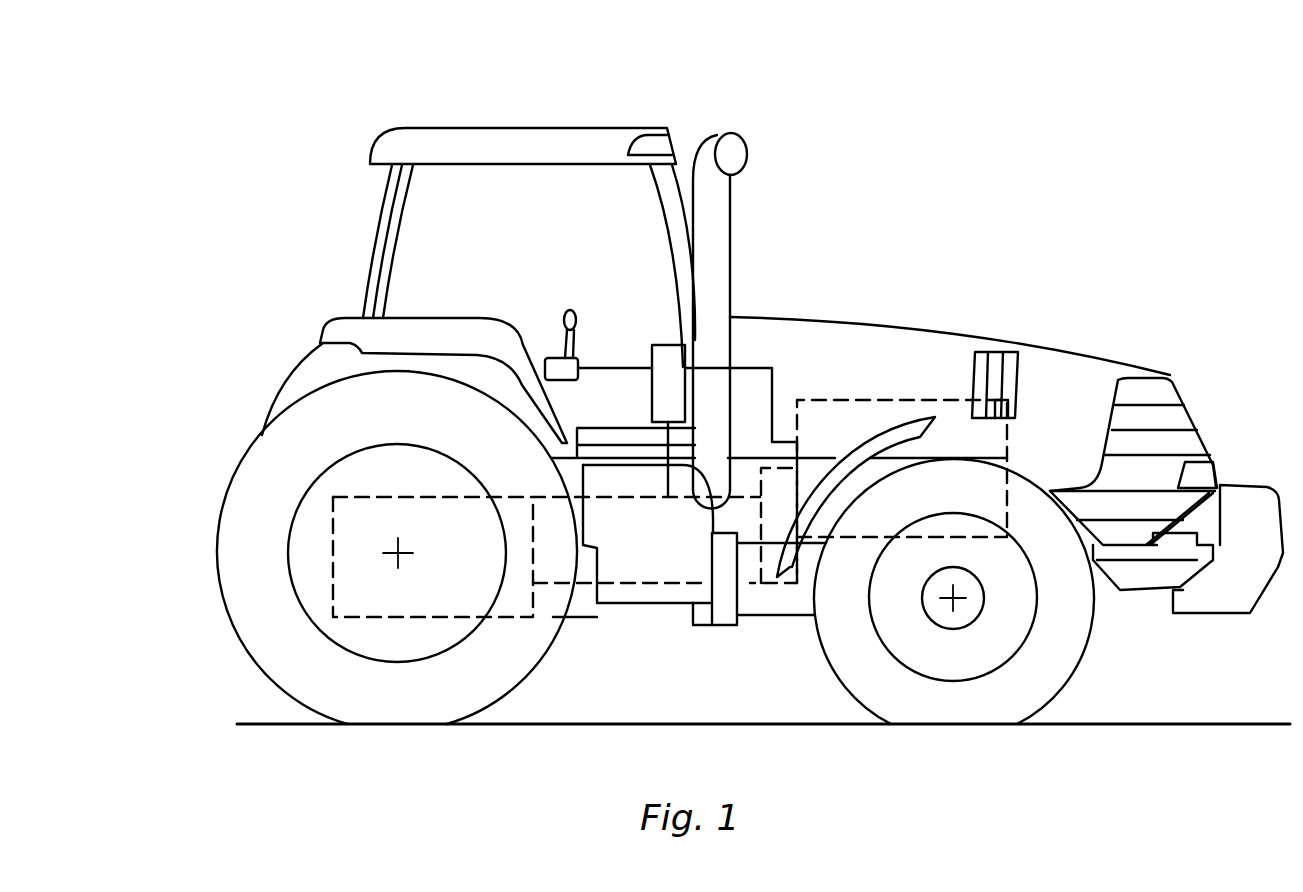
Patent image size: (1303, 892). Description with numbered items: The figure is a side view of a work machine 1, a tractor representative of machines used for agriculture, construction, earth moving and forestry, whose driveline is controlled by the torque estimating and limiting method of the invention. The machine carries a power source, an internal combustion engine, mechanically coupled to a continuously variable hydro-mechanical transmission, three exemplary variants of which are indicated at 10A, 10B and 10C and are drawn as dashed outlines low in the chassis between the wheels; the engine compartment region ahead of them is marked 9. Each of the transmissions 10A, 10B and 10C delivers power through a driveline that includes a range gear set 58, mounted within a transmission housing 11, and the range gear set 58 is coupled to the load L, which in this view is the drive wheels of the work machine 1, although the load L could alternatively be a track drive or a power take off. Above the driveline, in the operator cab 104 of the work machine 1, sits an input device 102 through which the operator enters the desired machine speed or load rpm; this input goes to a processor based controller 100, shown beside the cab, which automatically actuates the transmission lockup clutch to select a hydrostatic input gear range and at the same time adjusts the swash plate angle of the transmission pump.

The work machine 1 is at (1140, 159).
The engine 9 is at (889, 400).
The continuously variable hydro-mechanical transmission 10A is at (660, 590).
The continuously variable hydro-mechanical transmission 10B is at (617, 648).
The continuously variable hydro-mechanical transmission 10C is at (745, 591).
The transmission housing 11 is at (750, 587).
The range gear set 58 is at (420, 597).
The processor based controller 100 is at (663, 345).
The input device 102 is at (565, 312).
The operator cab 104 is at (540, 125).
The load L is at (242, 655).